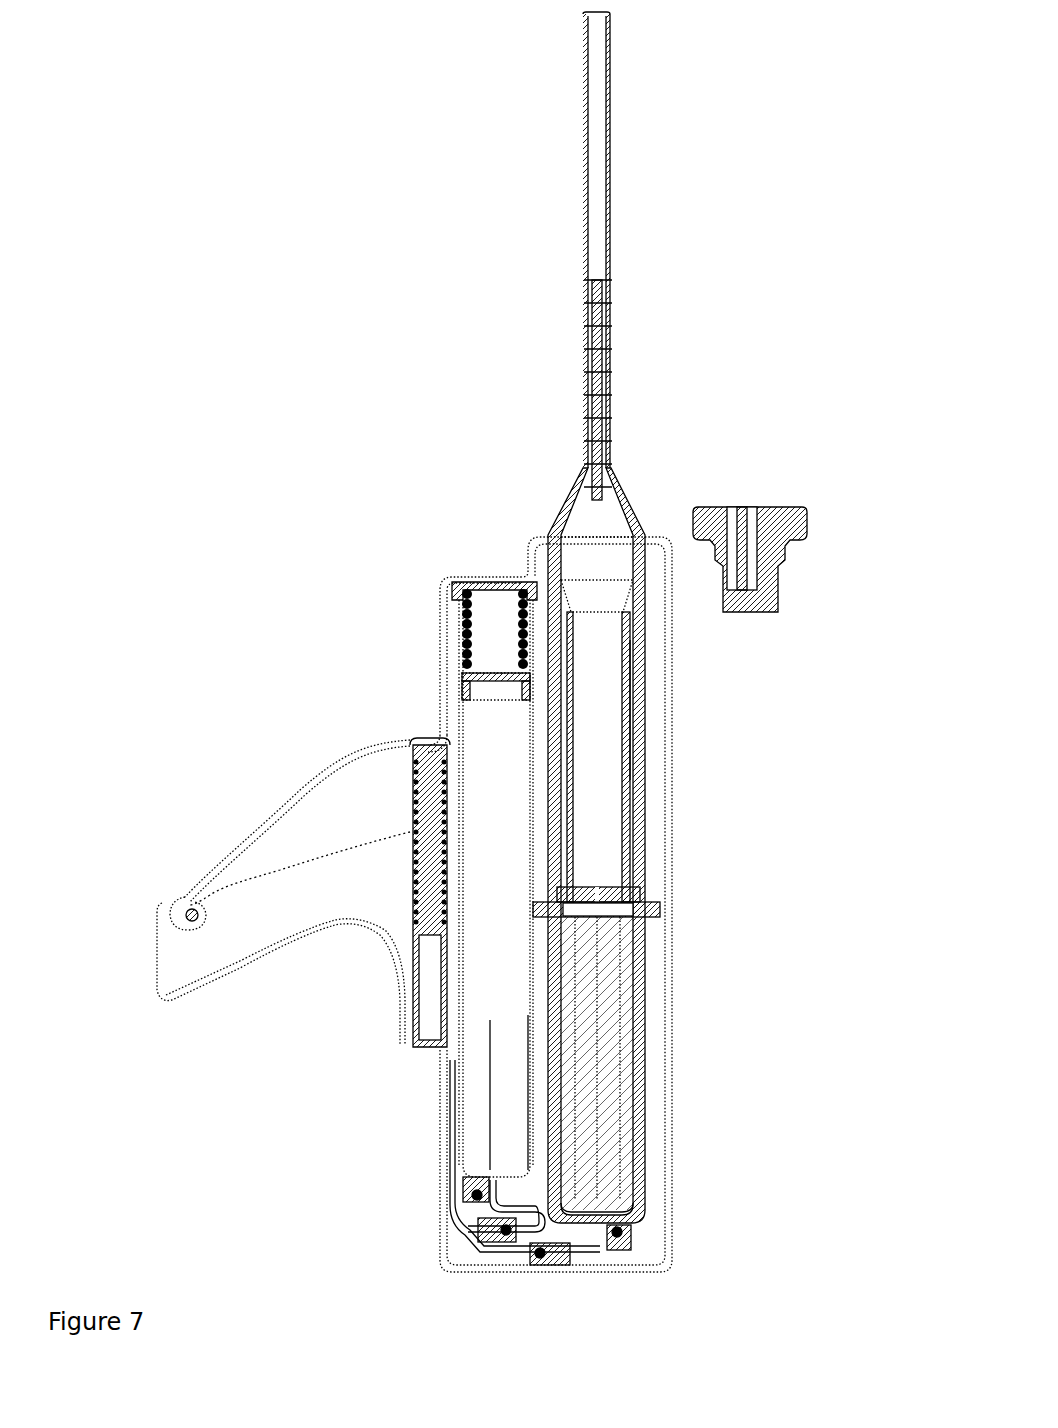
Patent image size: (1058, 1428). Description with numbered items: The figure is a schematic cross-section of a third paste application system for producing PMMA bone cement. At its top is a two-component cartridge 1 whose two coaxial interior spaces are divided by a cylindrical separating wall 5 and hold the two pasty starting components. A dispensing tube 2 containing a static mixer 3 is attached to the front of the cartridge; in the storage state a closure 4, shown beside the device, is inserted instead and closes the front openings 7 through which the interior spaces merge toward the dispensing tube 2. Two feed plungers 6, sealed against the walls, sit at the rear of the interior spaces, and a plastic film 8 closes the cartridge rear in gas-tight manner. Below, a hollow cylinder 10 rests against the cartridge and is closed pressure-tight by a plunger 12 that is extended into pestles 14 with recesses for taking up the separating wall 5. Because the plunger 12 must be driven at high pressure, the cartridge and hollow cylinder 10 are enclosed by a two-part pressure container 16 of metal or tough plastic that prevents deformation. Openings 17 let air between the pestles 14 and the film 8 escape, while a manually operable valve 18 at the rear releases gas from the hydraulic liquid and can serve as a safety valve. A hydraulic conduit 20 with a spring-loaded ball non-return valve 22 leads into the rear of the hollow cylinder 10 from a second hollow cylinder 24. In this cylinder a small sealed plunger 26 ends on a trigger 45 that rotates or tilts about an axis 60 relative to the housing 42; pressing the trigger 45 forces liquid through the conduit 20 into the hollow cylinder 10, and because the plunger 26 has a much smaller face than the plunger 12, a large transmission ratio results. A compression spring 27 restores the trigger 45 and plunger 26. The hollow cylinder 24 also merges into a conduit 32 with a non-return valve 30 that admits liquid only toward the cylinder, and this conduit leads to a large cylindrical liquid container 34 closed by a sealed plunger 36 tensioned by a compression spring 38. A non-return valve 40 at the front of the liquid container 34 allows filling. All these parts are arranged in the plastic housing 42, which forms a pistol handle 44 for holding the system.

The two-component cartridge 1 is at (639, 736).
The dispensing tube 2 is at (597, 145).
The static mixer 3 is at (604, 328).
The closure 4 is at (770, 540).
The separating wall 5 is at (623, 777).
The feed plungers 6 is at (602, 896).
The openings 7 is at (624, 591).
The film 8 is at (607, 910).
The hollow cylinder 10 is at (552, 1040).
The plunger 12 is at (617, 1205).
The pestles 14 is at (633, 1130).
The pressure container 16 is at (641, 634).
The openings 17 is at (641, 921).
The manually operable valve 18 is at (620, 1238).
The hydraulic conduit 20 is at (480, 1252).
The non-return valve 22 is at (555, 1262).
The hollow cylinder 24 is at (435, 995).
The plunger 26 is at (412, 790).
The compression spring 27 is at (413, 850).
The non-return valve 30 is at (490, 1228).
The conduit 32 is at (475, 1182).
The liquid container 34 is at (528, 1013).
The plunger 36 is at (462, 685).
The compression spring 38 is at (460, 615).
The non-return valve 40 is at (477, 1185).
The housing 42 is at (660, 538).
The pistol handle 44 is at (228, 972).
The trigger 45 is at (318, 768).
The axis 60 is at (190, 917).